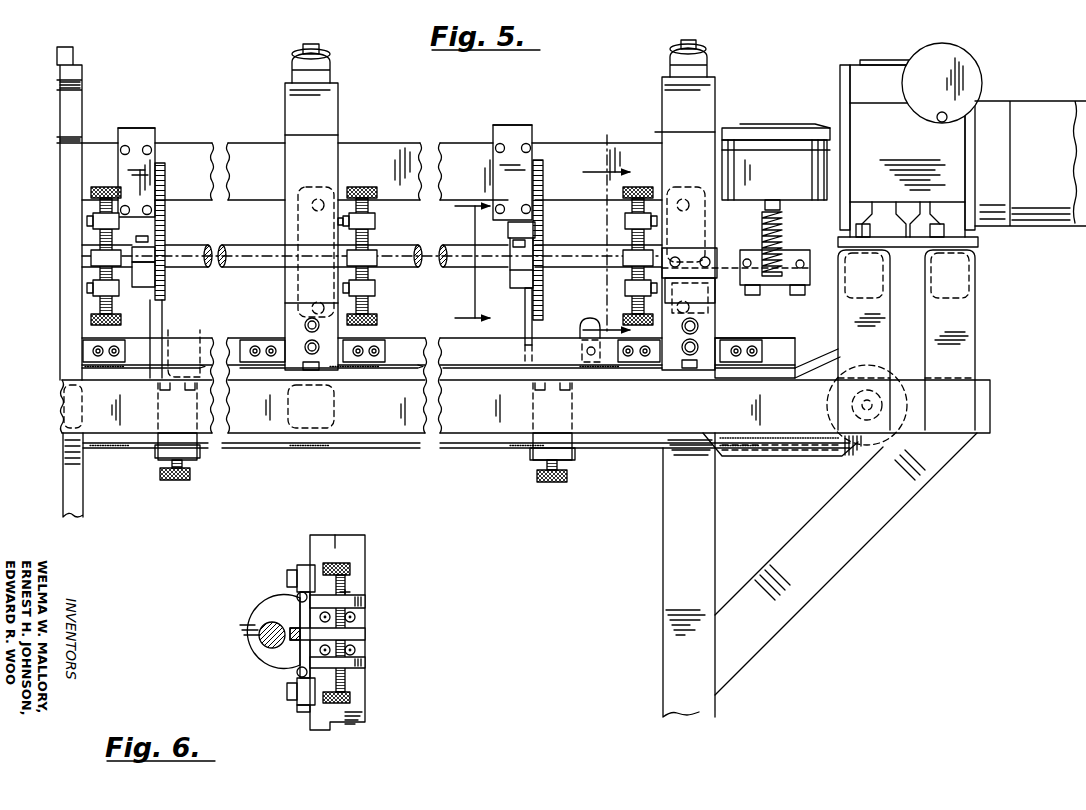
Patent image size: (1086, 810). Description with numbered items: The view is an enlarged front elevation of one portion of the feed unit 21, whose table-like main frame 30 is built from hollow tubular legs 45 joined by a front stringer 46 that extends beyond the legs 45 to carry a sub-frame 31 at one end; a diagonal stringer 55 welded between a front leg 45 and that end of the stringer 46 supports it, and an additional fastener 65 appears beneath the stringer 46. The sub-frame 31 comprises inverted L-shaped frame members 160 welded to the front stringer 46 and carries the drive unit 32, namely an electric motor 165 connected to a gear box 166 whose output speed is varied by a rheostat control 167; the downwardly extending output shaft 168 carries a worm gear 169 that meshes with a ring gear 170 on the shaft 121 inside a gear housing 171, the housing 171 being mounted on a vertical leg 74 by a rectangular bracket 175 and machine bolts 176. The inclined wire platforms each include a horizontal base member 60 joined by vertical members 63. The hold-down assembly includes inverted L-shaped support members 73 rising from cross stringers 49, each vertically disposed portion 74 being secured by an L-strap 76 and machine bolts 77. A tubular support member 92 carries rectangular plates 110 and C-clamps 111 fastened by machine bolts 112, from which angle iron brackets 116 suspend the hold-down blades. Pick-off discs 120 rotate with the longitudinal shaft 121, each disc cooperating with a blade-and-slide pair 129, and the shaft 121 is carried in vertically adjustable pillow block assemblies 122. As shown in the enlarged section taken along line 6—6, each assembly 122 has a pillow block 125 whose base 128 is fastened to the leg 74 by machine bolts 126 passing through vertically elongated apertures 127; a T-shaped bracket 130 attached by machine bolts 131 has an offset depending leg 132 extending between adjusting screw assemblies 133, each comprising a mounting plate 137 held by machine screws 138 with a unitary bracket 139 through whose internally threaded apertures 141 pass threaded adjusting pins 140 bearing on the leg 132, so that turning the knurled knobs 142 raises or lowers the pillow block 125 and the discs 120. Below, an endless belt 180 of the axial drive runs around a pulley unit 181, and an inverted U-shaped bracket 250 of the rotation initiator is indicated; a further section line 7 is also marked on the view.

In FIG. 5, the feed unit 21 is at (603, 112).
In FIG. 5, the main frame 30 is at (600, 445).
In FIG. 5, the sub-frame 31 is at (984, 370).
In FIG. 5, the drive unit 32 is at (1006, 105).
In FIG. 5, the legs 45 is at (668, 556).
In FIG. 5, the front stringer 46 is at (478, 432).
In FIG. 5, the cross stringers 49 is at (285, 428).
In FIG. 5, the diagonal stringer 55 is at (842, 557).
In FIG. 5, the horizontal base member 60 is at (172, 355).
In FIG. 5, the vertical members 63 is at (158, 312).
In FIG. 5, the clamp screw 65 is at (156, 469).
In FIG. 5, the inverted L-shaped support members 73 is at (84, 98).
In FIG. 5, the vertically disposed portion 74 is at (288, 285).
In FIG. 6, the vertically disposed portion 74 is at (365, 540).
In FIG. 5, the L-strap 76 is at (330, 378).
In FIG. 5, the machine bolts 77 is at (306, 362).
In FIG. 5, the elongated tubular support member 92 is at (398, 143).
In FIG. 5, the rectangular plates 110 is at (150, 158).
In FIG. 5, the C-clamps 111 is at (127, 128).
In FIG. 5, the machine bolts 112 is at (128, 147).
In FIG. 5, the angle iron bracket 116 is at (163, 222).
In FIG. 5, the pick-off discs 120 is at (168, 296).
In FIG. 5, the rotatable shaft 121 is at (238, 243).
In FIG. 6, the rotatable shaft 121 is at (265, 622).
In FIG. 5, the pillow block assemblies 122 is at (290, 312).
In FIG. 6, the pillow block 125 is at (240, 625).
In FIG. 6, the machine bolts 126 is at (292, 703).
In FIG. 6, the vertically elongated apertures 127 is at (300, 728).
In FIG. 6, the base 128 is at (300, 565).
In FIG. 5, the blade and slide member pair 129 is at (522, 300).
In FIG. 6, the T-shaped bracket 130 is at (298, 642).
In FIG. 5, the machine bolts 131 is at (346, 226).
In FIG. 6, the machine bolts 131 is at (298, 592).
In FIG. 5, the depending leg 132 is at (92, 258).
In FIG. 6, the depending leg 132 is at (366, 634).
In FIG. 5, the adjusting screw assemblies 133 is at (380, 193).
In FIG. 6, the adjusting screw assemblies 133 is at (337, 557).
In FIG. 6, the mounting plate 137 is at (366, 602).
In FIG. 6, the machine screws 138 is at (354, 618).
In FIG. 5, the bracket 139 is at (96, 224).
In FIG. 5, the adjusting pins 140 is at (100, 208).
In FIG. 6, the adjusting pins 140 is at (346, 585).
In FIG. 6, the internally threaded apertures 141 is at (355, 598).
In FIG. 5, the knurled knobs 142 is at (106, 188).
In FIG. 6, the knurled knobs 142 is at (352, 567).
In FIG. 5, the inverted L-shaped frame members 160 is at (880, 328).
In FIG. 5, the electric motor 165 is at (913, 146).
In FIG. 5, the gear box 166 is at (793, 178).
In FIG. 5, the rheostat control 167 is at (950, 48).
In FIG. 5, the output shaft 168 is at (841, 200).
In FIG. 5, the worm gear 169 is at (798, 295).
In FIG. 5, the ring gear 170 is at (775, 292).
In FIG. 5, the gear housing 171 is at (907, 275).
In FIG. 5, the rectangular bracket 175 is at (690, 293).
In FIG. 5, the machine bolts 176 is at (705, 262).
In FIG. 5, the endless belt 180 is at (797, 372).
In FIG. 5, the pulley unit 181 is at (834, 456).
In FIG. 5, the inverted U-shaped bracket 250 is at (590, 318).
In FIG. 5, the section line 6— 6 is at (595, 238).
In FIG. 5, the section line 7- 7 is at (461, 263).